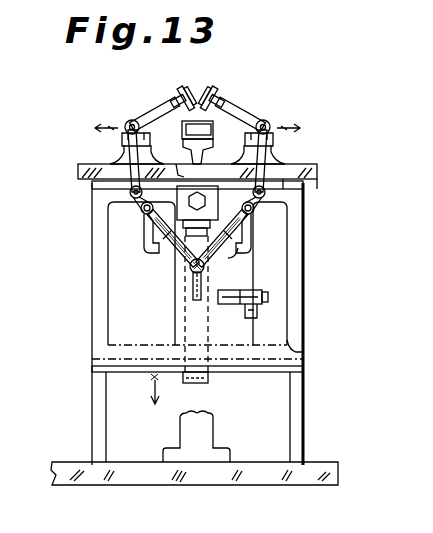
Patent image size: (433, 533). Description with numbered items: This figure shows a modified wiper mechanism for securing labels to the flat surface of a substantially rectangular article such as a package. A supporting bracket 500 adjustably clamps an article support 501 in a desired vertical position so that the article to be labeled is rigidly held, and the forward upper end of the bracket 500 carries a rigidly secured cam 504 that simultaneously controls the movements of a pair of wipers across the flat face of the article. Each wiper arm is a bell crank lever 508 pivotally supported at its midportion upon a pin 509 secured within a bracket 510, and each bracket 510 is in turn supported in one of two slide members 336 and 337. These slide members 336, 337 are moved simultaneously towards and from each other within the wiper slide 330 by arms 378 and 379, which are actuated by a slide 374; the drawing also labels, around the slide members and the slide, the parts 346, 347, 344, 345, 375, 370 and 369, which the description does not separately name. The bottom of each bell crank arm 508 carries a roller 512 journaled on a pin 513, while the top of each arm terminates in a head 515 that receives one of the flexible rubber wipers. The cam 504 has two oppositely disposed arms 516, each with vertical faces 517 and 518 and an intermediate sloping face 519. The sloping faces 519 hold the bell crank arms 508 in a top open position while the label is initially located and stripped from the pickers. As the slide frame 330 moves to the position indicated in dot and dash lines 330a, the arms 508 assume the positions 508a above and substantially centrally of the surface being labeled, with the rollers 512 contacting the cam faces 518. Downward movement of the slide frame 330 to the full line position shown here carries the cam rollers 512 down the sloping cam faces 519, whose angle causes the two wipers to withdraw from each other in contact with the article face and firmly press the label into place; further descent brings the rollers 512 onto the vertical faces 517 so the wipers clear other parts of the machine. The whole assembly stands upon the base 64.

The base 64 is at (340, 476).
The wiper slide 330 is at (304, 304).
The dot and dash line position of slide frame 330a is at (303, 354).
The slide member 336 is at (126, 160).
The slide member 337 is at (280, 160).
The left pivot pin 344 is at (129, 192).
The right pivot pin 345 is at (266, 193).
The left plate end 346 is at (84, 167).
The right plate end 347 is at (314, 172).
The stub fitting 369 is at (266, 300).
The cylinder 370 is at (259, 295).
The slide 374 is at (195, 300).
The stem 375 is at (193, 282).
The arm 378 is at (174, 263).
The arm 379 is at (233, 257).
The supporting bracket 500 is at (210, 424).
The article support 501 is at (201, 147).
The cam 504 is at (144, 251).
The bell crank lever 508 is at (152, 115).
The position of bell crank arms 508a is at (163, 105).
The pin 509 is at (125, 123).
The bracket 510 is at (121, 136).
The roller 512 is at (139, 212).
The pin 513 is at (141, 209).
The head 515 is at (182, 96).
The cam arm 516 is at (158, 239).
The vertical cam face 517 is at (152, 229).
The vertical cam face 518 is at (185, 177).
The sloping cam face 519 is at (146, 221).